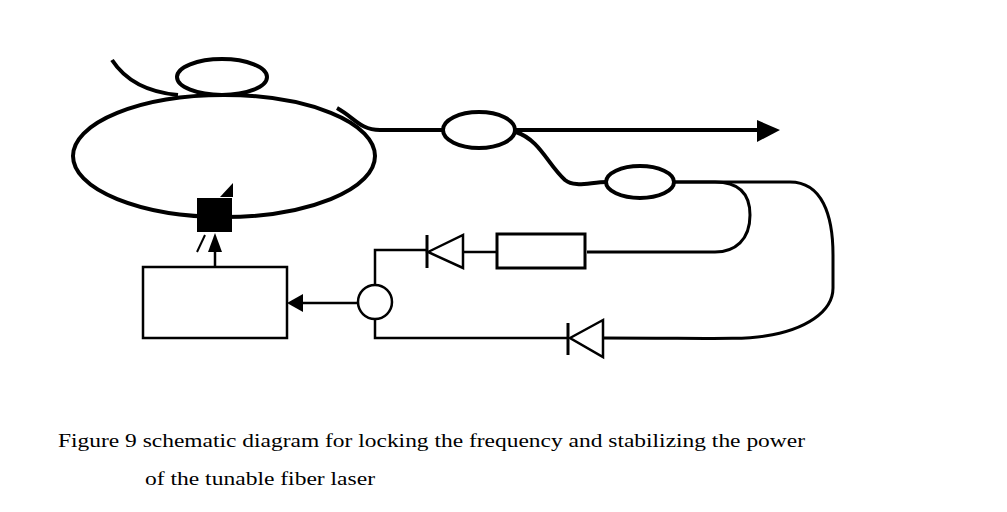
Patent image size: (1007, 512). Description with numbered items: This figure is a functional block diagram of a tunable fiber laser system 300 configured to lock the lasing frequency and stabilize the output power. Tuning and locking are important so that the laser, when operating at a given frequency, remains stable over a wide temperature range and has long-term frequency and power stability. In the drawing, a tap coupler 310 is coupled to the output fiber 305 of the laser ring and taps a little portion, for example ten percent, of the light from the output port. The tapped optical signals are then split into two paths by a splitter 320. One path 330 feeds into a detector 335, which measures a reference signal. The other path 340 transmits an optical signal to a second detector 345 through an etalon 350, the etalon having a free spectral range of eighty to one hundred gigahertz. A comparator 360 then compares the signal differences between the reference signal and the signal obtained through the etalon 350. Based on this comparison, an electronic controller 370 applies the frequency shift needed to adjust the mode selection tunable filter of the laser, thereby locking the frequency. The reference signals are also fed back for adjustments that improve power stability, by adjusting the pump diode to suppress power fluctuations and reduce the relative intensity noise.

The tunable fiber laser system 300 is at (267, 103).
The output fiber 305 is at (562, 127).
The tap coupler 310 is at (497, 137).
The splitter 320 is at (638, 188).
The path 330 is at (817, 293).
The detector 335 is at (592, 332).
The path 340 is at (723, 250).
The second detector 345 is at (438, 238).
The etalon 350 is at (505, 248).
The comparator 360 is at (373, 310).
The electronic controller 370 is at (267, 290).